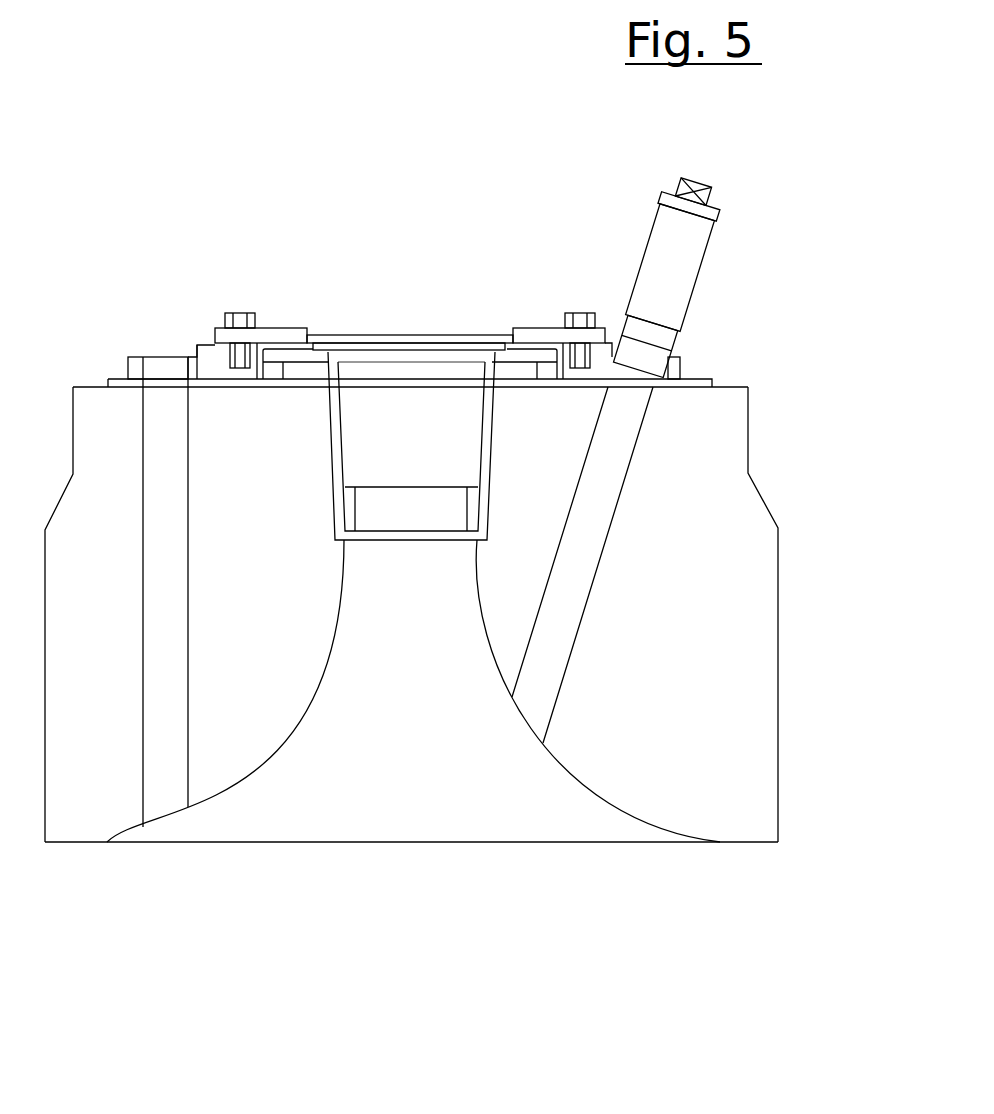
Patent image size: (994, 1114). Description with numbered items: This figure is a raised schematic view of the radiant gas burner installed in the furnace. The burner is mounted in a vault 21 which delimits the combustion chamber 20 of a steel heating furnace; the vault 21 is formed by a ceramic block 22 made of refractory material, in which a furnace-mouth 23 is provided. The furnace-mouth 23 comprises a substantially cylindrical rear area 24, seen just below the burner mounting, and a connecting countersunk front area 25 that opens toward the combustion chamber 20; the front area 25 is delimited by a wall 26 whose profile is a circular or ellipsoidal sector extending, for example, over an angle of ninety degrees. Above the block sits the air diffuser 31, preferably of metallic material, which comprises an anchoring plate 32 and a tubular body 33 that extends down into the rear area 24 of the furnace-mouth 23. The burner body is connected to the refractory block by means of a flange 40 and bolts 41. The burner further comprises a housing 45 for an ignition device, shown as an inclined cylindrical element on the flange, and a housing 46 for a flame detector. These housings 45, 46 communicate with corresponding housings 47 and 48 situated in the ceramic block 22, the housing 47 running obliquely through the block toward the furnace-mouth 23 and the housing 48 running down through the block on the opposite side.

The combustion chamber 20 is at (410, 817).
The vault 21 is at (782, 627).
The ceramic block 22 is at (272, 707).
The furnace-mouth 23 is at (417, 570).
The rear area 24 is at (707, 442).
The front area 25 is at (728, 683).
The wall 26 is at (608, 808).
The air diffuser 31 is at (379, 332).
The anchoring plate 32 is at (520, 350).
The tubular body 33 is at (493, 427).
The flange 40 is at (290, 328).
The bolts 41 is at (240, 312).
The housing for ignition device 45 is at (647, 357).
The housing for flame detector 46 is at (160, 370).
The housing in ceramic block 47 is at (575, 579).
The housing in ceramic block 48 is at (173, 573).